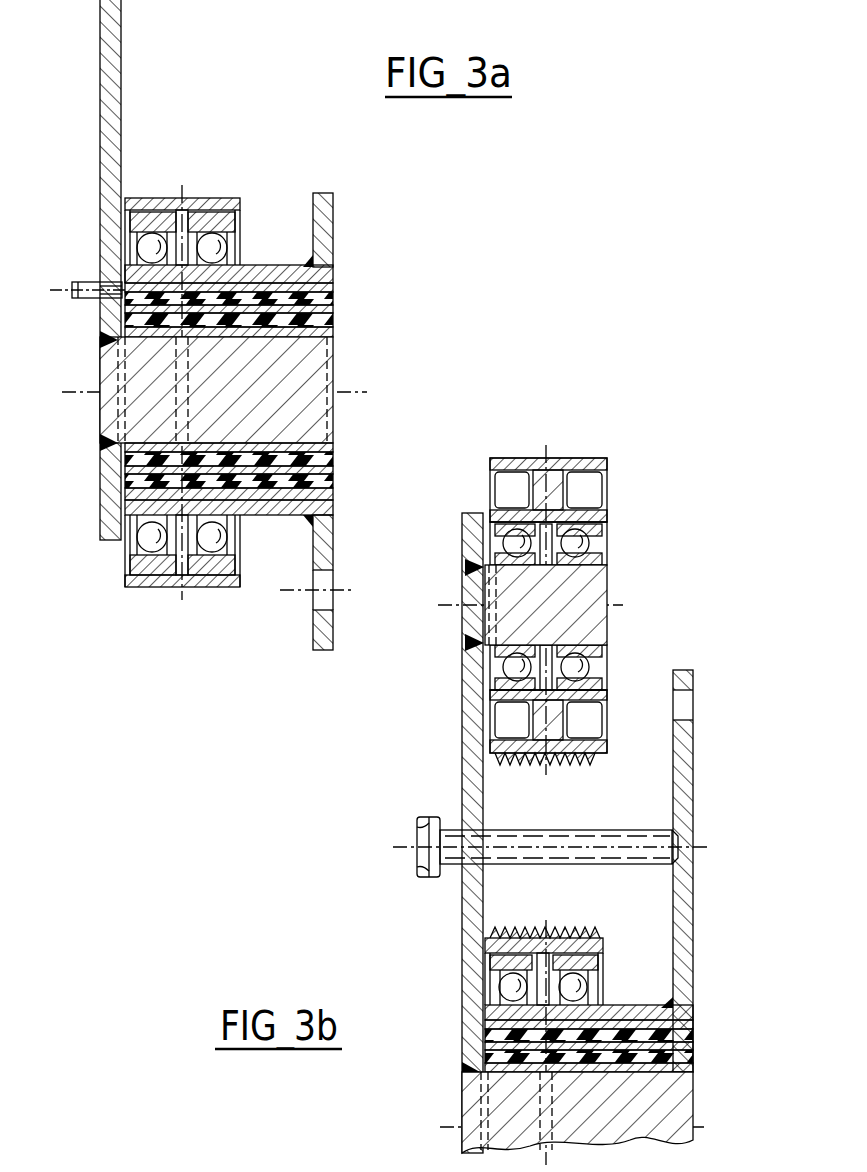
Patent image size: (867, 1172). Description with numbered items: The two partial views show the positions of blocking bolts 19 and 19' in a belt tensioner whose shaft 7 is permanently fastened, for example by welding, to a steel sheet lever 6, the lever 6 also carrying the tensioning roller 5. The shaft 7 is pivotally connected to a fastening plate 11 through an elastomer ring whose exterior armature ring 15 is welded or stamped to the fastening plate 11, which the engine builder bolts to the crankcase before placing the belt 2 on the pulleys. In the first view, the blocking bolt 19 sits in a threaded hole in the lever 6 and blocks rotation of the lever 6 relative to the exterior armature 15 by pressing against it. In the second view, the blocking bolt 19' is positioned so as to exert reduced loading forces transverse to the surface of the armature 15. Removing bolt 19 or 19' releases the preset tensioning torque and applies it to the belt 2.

In FIG. 3b, the belt 2 is at (572, 925).
In FIG. 3b, the tensioning roller 5 is at (558, 488).
In FIG. 3a, the lever 6 is at (97, 74).
In FIG. 3b, the lever 6 is at (462, 736).
In FIG. 3a, the shaft 7 is at (342, 394).
In FIG. 3b, the shaft 7 is at (658, 1124).
In FIG. 3a, the fastening plate 11 is at (334, 222).
In FIG. 3b, the fastening plate 11 is at (684, 975).
In FIG. 3a, the exterior armature ring 15 is at (340, 288).
In FIG. 3a, the blocking bolt 19 is at (79, 259).
In FIG. 3b, the blocking bolt 19' is at (523, 865).